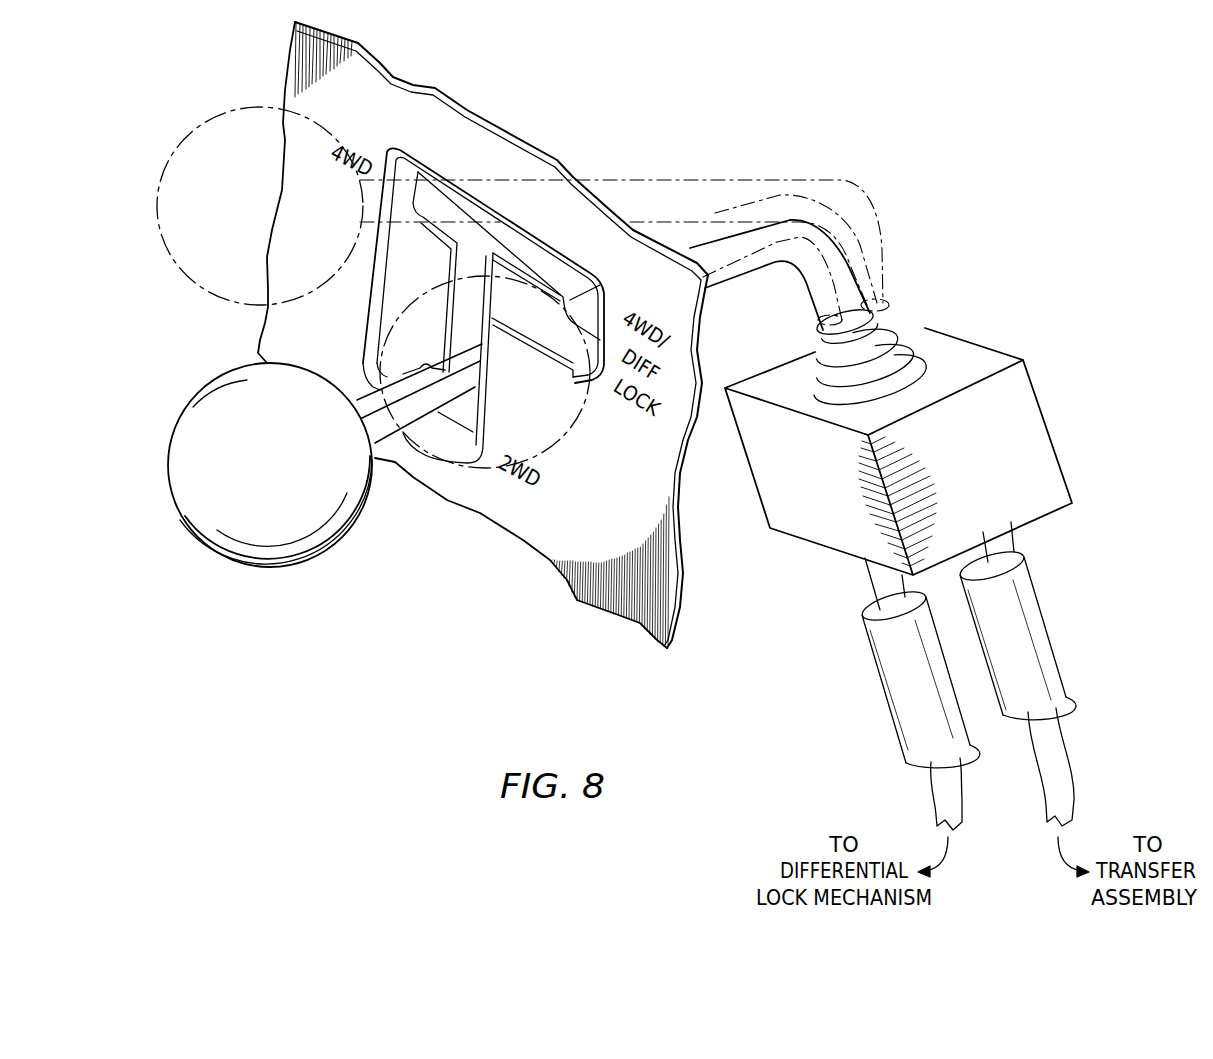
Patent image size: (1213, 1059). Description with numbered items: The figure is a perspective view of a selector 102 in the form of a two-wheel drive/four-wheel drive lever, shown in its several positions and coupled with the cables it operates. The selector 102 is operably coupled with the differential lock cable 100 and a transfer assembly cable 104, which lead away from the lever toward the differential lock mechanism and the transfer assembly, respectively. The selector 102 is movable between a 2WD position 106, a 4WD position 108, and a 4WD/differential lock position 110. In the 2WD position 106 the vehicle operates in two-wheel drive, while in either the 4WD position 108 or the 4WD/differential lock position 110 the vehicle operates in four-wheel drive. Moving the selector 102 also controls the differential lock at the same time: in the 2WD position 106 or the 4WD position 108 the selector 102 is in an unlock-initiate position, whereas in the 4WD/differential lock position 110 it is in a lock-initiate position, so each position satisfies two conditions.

The differential lock cable 100 is at (883, 688).
The selector 102 is at (225, 683).
The transfer assembly cable 104 is at (1050, 623).
The 2WD position 106 is at (260, 568).
The 4WD position 108 is at (190, 130).
The 4WD/differential lock position 110 is at (560, 452).